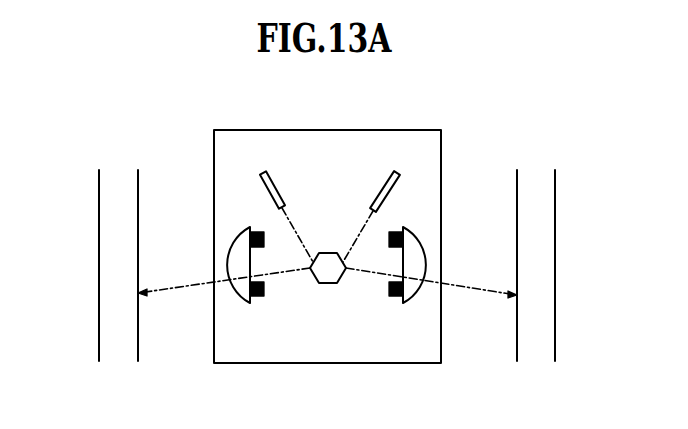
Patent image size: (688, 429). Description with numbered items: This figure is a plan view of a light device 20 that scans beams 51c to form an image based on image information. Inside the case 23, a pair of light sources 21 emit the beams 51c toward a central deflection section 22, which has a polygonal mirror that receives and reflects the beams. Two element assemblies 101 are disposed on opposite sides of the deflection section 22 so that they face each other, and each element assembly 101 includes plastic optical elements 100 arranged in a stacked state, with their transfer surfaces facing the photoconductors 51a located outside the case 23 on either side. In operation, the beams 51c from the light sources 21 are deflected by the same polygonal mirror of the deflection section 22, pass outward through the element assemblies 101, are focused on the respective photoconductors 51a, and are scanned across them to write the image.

The light device 20 is at (520, 104).
The light source 21 is at (279, 183).
The deflection section 22 is at (328, 284).
The case 23 is at (231, 363).
The photoconductor 51a is at (97, 255).
The beam 51c is at (371, 222).
The plastic optical element 100 is at (231, 225).
The element assembly 101 is at (231, 301).